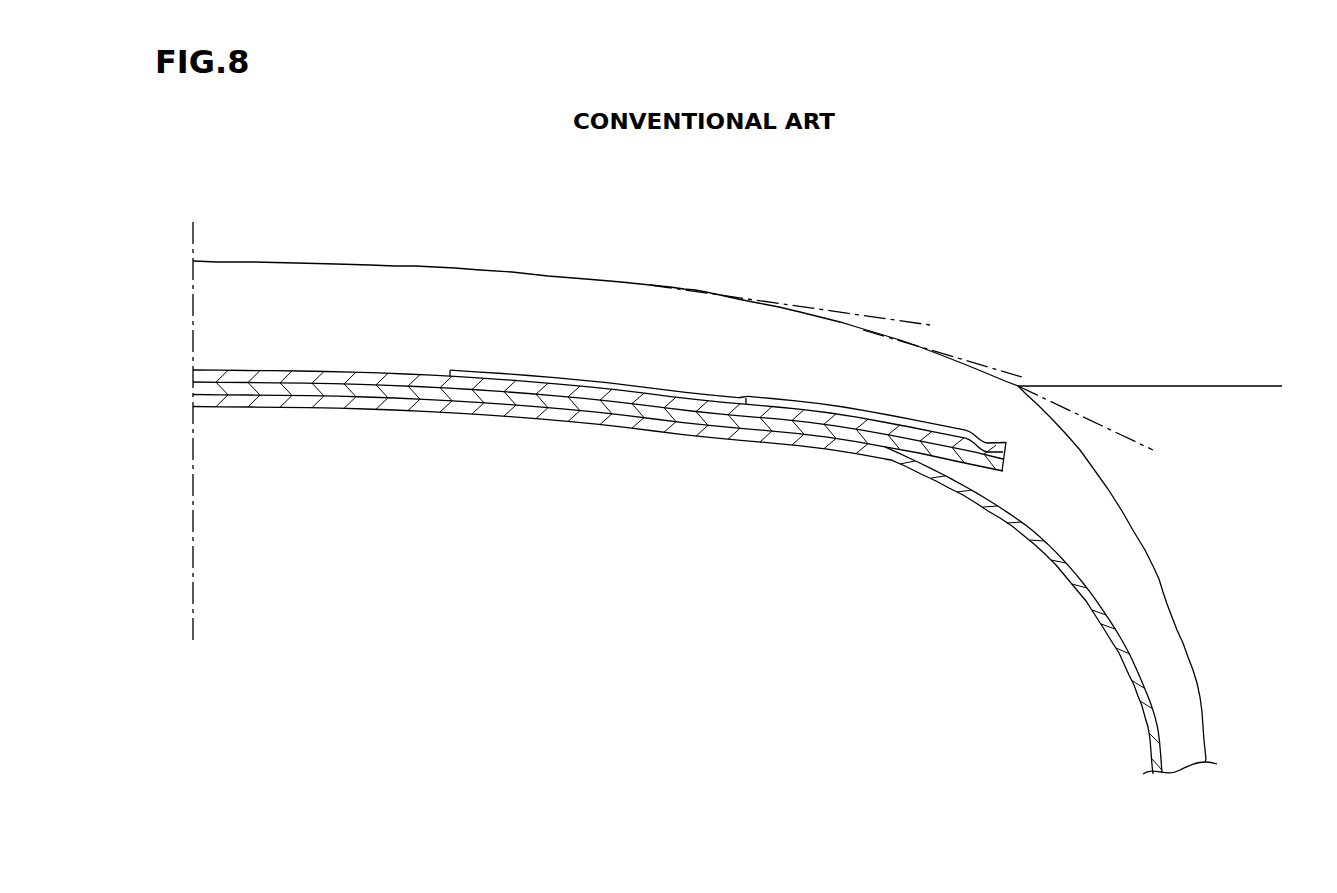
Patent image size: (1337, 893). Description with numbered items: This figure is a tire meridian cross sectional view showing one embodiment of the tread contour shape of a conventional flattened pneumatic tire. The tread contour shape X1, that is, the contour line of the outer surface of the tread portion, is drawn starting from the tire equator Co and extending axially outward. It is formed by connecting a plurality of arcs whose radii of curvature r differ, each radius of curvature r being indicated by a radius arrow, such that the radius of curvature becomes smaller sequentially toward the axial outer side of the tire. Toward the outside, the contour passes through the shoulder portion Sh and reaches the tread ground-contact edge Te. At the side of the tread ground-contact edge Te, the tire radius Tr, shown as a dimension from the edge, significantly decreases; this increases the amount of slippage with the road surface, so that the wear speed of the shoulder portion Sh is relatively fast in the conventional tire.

The tread contour shape X1 is at (462, 265).
The tire equatorial plane Co is at (195, 421).
The shoulder portion Sh is at (998, 297).
The tread ground-contact edge Te is at (1038, 363).
The tire radius Tr is at (1278, 386).
The radius of curvature r is at (345, 540).